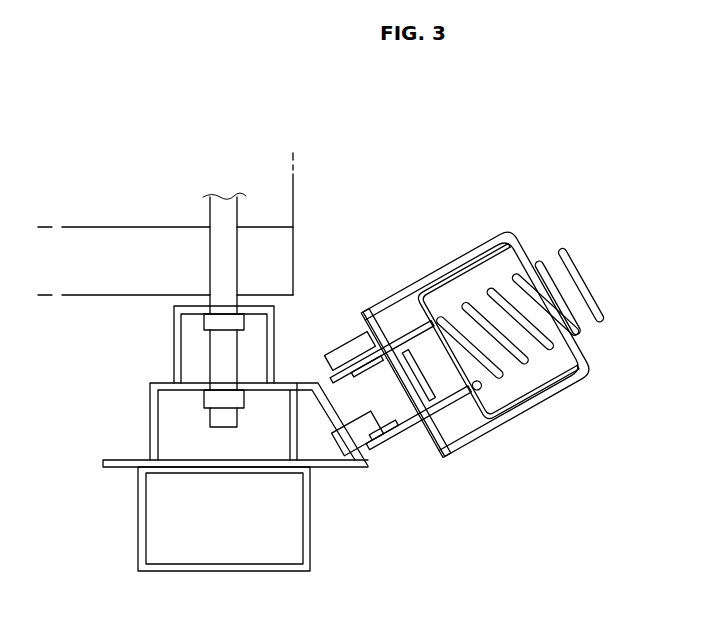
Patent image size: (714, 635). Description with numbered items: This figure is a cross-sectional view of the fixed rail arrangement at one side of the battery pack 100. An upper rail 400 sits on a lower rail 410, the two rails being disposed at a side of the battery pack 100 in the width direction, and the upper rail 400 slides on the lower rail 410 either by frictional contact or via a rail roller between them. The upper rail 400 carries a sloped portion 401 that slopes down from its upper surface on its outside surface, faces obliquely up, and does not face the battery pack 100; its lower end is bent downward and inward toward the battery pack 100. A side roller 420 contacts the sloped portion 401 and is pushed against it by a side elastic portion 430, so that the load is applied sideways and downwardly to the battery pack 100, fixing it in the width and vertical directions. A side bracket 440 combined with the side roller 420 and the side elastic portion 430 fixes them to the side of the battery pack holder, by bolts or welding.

The battery pack 100 is at (272, 186).
The upper rail 400 is at (150, 413).
The sloped portion 401 is at (345, 420).
The lower rail 410 is at (141, 516).
The side roller 420 is at (373, 383).
The side elastic portion 430 is at (565, 253).
The side bracket 440 is at (557, 397).